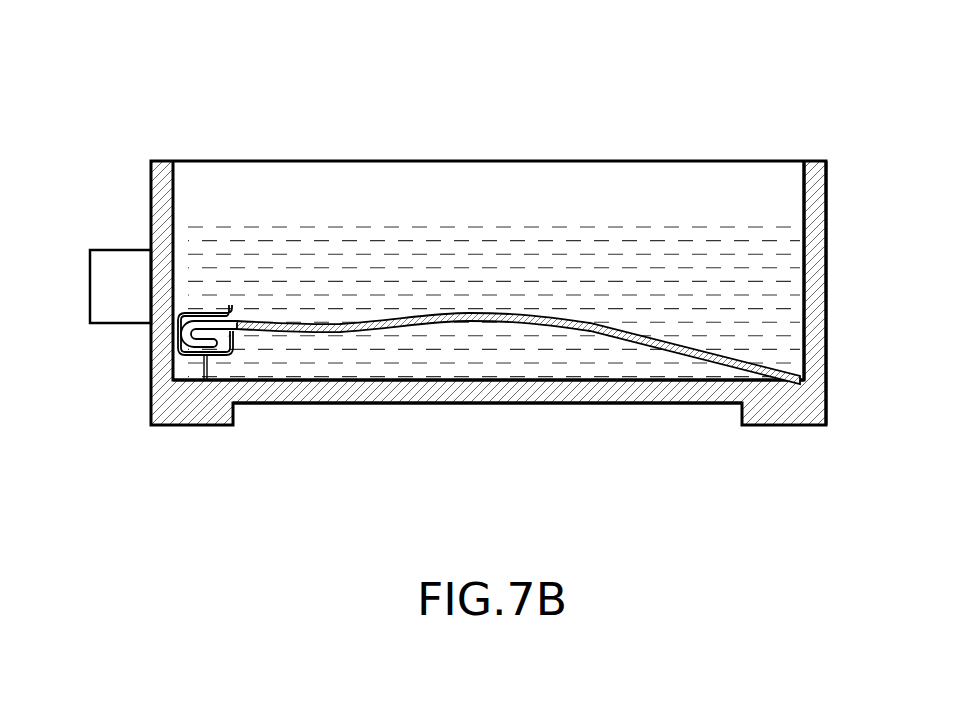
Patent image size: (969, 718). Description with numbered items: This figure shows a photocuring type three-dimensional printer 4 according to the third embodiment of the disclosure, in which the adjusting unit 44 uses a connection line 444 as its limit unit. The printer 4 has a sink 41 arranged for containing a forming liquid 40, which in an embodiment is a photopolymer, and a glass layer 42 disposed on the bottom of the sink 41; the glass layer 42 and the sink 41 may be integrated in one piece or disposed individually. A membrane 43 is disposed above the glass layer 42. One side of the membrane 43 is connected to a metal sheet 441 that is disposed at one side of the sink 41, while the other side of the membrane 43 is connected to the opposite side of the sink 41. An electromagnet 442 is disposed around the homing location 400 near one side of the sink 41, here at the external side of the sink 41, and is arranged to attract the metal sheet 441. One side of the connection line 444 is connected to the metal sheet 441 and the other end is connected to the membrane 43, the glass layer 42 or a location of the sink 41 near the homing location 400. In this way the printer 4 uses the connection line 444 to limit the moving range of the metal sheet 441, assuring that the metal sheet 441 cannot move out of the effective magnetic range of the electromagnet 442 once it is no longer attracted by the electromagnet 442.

The 3D printer 4 is at (472, 42).
The forming liquid 40 is at (735, 253).
The sink 41 is at (815, 185).
The glass layer 42 is at (434, 393).
The membrane 43 is at (590, 330).
The adjusting unit 44 is at (156, 255).
The metal sheet 441 is at (211, 318).
The electromagnet 442 is at (113, 272).
The connection line 444 is at (207, 369).
The homing location 400 is at (205, 387).